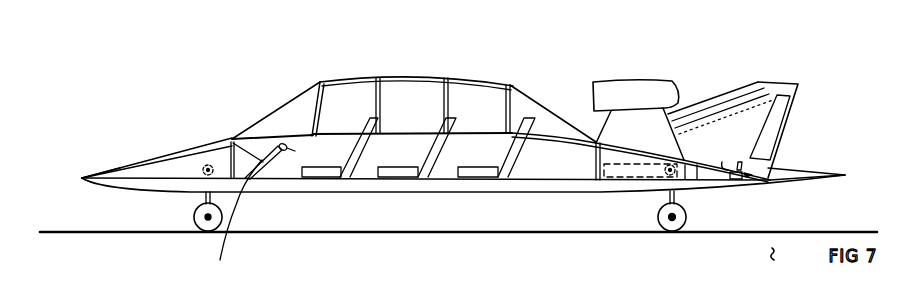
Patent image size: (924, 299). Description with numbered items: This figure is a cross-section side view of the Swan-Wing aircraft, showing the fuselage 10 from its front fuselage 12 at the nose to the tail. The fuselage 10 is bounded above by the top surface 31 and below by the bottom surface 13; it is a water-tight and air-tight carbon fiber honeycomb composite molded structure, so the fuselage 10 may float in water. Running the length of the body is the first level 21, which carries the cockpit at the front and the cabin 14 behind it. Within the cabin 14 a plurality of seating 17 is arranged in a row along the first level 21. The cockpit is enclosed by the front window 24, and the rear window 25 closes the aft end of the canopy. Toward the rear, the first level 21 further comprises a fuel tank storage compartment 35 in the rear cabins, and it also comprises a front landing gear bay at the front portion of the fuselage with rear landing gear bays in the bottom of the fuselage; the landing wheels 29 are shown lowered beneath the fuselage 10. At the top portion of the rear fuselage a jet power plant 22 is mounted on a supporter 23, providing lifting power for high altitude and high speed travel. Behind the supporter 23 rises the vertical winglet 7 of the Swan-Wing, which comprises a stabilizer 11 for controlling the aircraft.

The vertical winglet 7 is at (750, 132).
The fuselage 10 is at (181, 153).
The stabilizer 11 is at (783, 113).
The front fuselage 12 is at (112, 168).
The bottom surface 13 is at (125, 188).
The cabin 14 is at (307, 107).
The seating 17 is at (333, 172).
The first level 21 is at (548, 180).
The jet power plant 22 is at (642, 91).
The supporter 23 is at (653, 136).
The front window 24 is at (277, 112).
The rear window 25 is at (552, 107).
The landing wheel 29 is at (200, 197).
The top surface 31 is at (437, 80).
The fuel tank storage compartment 35 is at (620, 175).